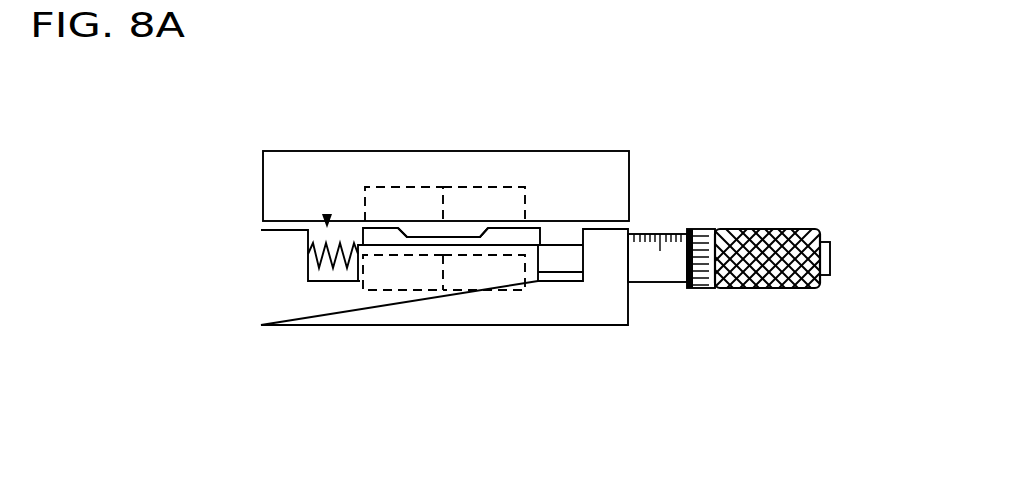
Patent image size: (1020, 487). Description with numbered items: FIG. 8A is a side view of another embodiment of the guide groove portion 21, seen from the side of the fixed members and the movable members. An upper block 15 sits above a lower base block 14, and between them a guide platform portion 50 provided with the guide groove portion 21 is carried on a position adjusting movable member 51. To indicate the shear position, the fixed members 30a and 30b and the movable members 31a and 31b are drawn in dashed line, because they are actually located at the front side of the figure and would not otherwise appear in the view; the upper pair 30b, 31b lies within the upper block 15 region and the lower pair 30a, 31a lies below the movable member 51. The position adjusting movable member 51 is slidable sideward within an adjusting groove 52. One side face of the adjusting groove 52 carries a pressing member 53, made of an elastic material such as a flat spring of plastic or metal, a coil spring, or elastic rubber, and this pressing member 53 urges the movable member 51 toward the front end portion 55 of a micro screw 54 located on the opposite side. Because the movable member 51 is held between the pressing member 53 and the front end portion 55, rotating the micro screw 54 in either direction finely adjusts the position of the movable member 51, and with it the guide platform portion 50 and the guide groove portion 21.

The base block 14 is at (273, 284).
The upper block 15 is at (572, 163).
The guide groove portion 21 is at (455, 228).
The fixed member 30a is at (398, 267).
The fixed member 30b is at (392, 197).
The movable member 31a is at (477, 267).
The movable member 31b is at (495, 197).
The guide platform portion 50 is at (530, 248).
The position adjusting movable member 51 is at (520, 237).
The adjusting groove 52 is at (327, 218).
The pressing member 53 is at (323, 270).
The micro screw 54 is at (762, 240).
The front end portion 55 is at (540, 263).